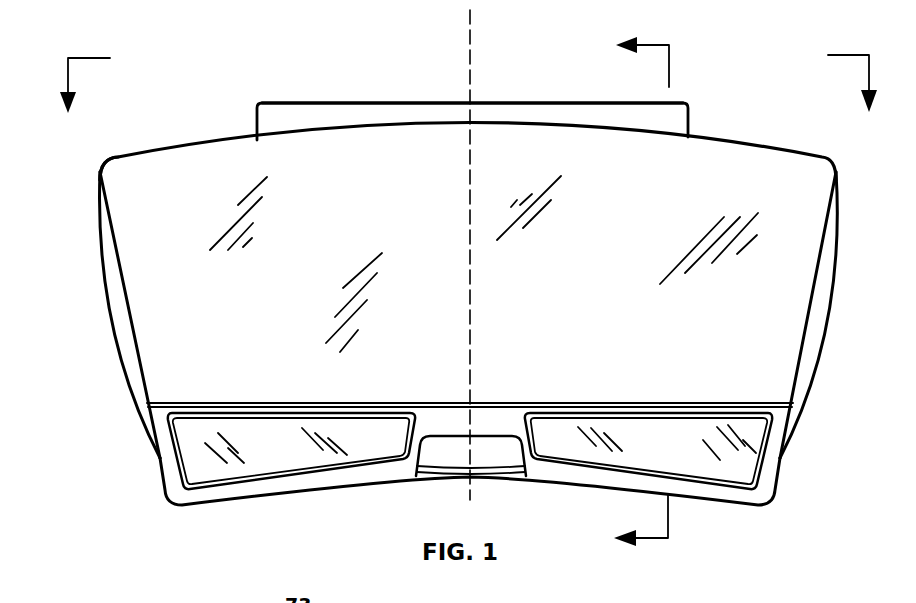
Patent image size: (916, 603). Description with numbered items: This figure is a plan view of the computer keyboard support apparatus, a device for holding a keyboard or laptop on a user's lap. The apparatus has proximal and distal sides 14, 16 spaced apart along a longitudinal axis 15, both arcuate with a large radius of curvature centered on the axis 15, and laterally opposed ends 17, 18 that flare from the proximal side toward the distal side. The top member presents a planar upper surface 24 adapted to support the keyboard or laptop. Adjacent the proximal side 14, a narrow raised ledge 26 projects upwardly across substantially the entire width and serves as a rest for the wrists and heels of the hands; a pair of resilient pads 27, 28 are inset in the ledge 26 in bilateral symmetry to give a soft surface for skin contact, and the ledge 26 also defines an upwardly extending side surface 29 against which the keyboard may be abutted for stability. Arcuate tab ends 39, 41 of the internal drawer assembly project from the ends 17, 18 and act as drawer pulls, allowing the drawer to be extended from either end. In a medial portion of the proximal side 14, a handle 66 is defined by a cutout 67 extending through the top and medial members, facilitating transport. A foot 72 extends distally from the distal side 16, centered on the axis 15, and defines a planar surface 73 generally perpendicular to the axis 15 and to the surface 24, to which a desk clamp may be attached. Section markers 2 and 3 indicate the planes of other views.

The proximal side 14 is at (290, 489).
The longitudinal axis 15 is at (480, 41).
The distal side 16 is at (178, 147).
The end 17 is at (121, 283).
The end 18 is at (817, 295).
The planar upper surface 24 is at (163, 220).
The raised ledge 26 is at (782, 412).
The resilient pad 27 is at (200, 463).
The resilient pad 28 is at (748, 458).
The side surface 29 is at (739, 403).
The tab end 39 is at (116, 375).
The tab end 41 is at (842, 233).
The handle 66 is at (507, 480).
The cutout 67 is at (452, 454).
The foot 72 is at (311, 117).
The planar surface 73 is at (402, 103).
The section line 2 is at (467, 96).
The section line 3 is at (631, 294).